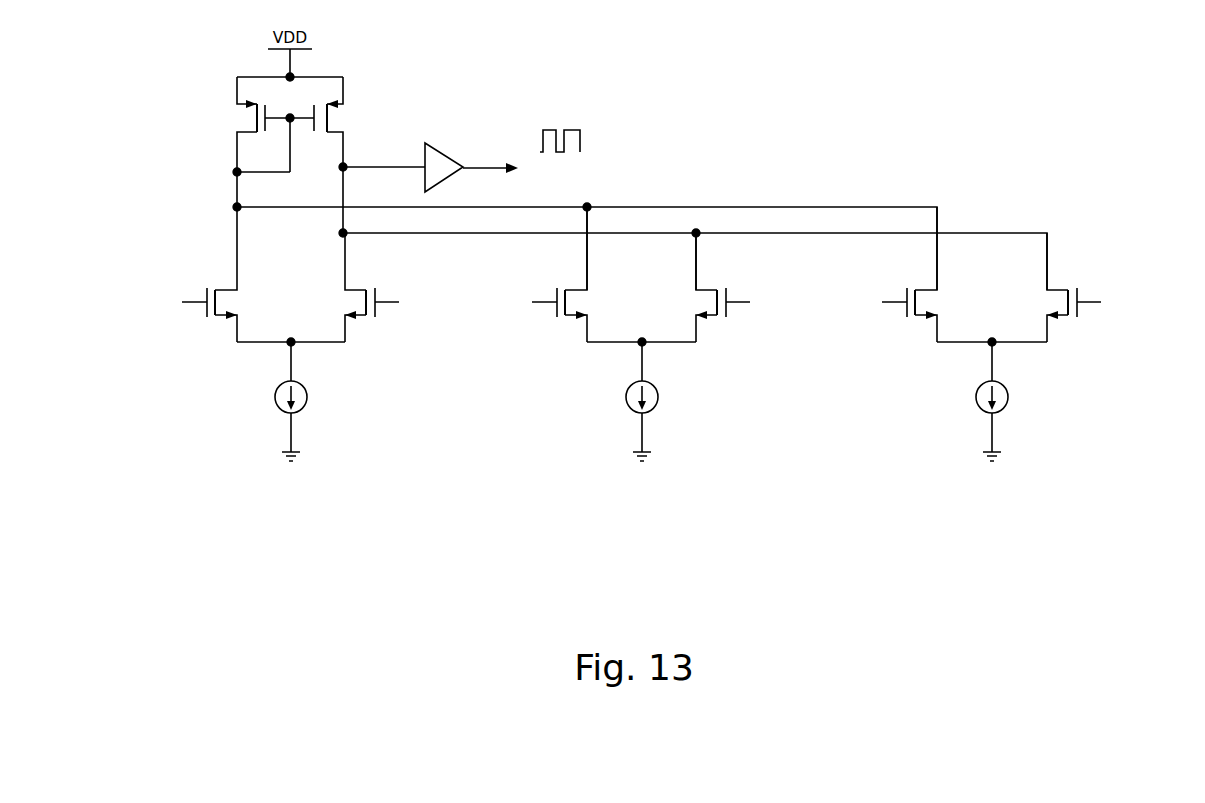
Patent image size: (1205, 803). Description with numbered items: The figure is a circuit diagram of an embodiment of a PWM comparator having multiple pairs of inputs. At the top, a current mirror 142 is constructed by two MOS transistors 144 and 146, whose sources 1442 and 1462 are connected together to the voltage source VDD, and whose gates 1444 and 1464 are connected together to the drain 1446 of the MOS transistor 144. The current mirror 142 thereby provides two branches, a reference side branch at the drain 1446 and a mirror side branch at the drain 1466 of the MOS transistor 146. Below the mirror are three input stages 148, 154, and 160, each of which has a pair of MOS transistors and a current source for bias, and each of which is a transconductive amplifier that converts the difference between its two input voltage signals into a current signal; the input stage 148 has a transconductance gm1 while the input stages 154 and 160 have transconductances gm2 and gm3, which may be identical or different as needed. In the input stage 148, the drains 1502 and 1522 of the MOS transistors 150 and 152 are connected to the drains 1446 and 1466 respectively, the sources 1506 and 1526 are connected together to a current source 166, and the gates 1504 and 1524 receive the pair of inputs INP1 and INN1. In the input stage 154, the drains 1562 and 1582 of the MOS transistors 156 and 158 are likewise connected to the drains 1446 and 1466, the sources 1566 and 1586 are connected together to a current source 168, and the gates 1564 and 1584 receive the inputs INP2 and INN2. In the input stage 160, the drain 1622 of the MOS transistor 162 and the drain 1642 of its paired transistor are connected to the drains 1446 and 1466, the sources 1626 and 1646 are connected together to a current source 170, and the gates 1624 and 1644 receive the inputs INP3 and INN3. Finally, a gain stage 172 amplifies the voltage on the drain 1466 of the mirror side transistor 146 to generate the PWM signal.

The current mirror 142 is at (277, 105).
The MOS transistor 144 is at (213, 127).
The source 1442 is at (236, 80).
The gate 1444 is at (267, 129).
The drain 1446 is at (236, 133).
The MOS transistor 146 is at (366, 140).
The source 1462 is at (344, 80).
The gate 1464 is at (313, 129).
The drain 1466 is at (344, 133).
The input stage 148 is at (279, 243).
The MOS transistor 150 is at (184, 296).
The drain 1502 is at (237, 253).
The gate 1504 is at (204, 302).
The source 1506 is at (237, 336).
The MOS transistor 152 is at (667, 309).
The drain 1522 is at (347, 262).
The gate 1524 is at (376, 317).
The source 1526 is at (347, 336).
The input stage 154 is at (630, 243).
The MOS transistor 156 is at (534, 296).
The drain 1562 is at (587, 256).
The gate 1564 is at (554, 302).
The source 1566 is at (587, 336).
The MOS transistor 158 is at (706, 309).
The drain 1582 is at (697, 262).
The gate 1584 is at (727, 317).
The source 1586 is at (697, 336).
The input stage 160 is at (980, 243).
The MOS transistor 162 is at (884, 296).
The drain 1622 is at (937, 256).
The gate 1624 is at (904, 302).
The source 1626 is at (937, 336).
The drain 1642 is at (1048, 262).
The gate 1644 is at (1078, 317).
The source 1646 is at (1048, 336).
The current source 166 is at (306, 399).
The current source 168 is at (656, 399).
The current source 170 is at (1006, 399).
The gain stage 172 is at (447, 152).